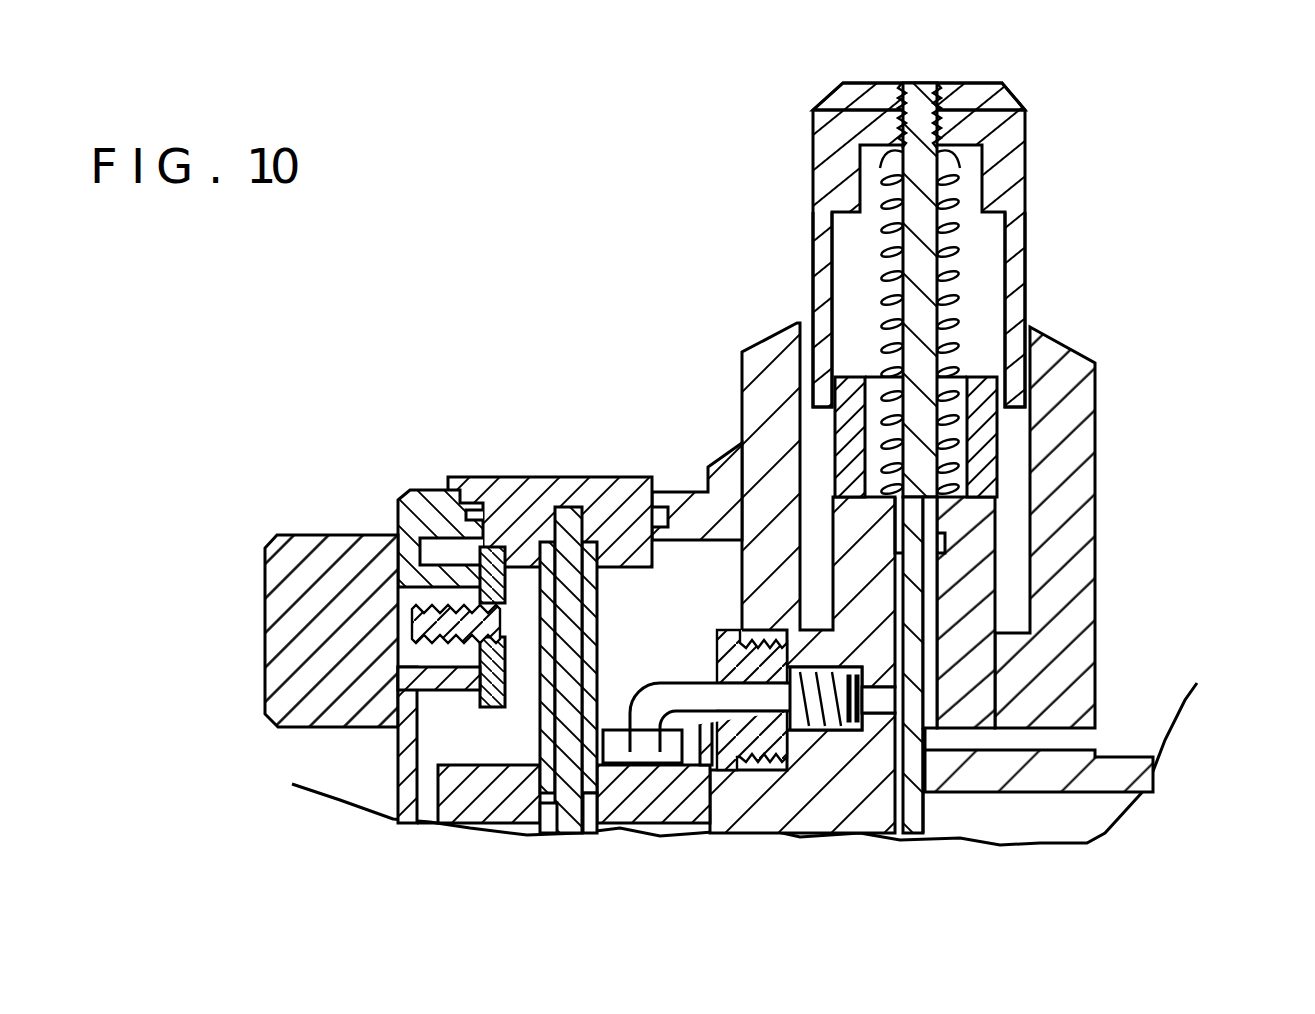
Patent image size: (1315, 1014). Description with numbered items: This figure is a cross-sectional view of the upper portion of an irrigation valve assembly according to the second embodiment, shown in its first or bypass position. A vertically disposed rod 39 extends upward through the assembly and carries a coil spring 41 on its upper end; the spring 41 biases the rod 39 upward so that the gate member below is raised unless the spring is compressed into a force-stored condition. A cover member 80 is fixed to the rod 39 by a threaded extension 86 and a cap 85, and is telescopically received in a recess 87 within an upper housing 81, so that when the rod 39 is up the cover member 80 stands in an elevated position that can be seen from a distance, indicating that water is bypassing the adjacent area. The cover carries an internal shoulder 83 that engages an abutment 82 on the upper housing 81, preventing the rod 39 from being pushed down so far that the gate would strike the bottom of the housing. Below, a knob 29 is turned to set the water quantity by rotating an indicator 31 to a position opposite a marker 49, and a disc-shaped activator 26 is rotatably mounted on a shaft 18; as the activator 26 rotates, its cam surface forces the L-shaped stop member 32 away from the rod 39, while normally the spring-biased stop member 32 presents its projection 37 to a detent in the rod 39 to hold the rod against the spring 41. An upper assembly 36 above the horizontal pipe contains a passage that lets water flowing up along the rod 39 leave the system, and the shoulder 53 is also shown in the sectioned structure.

The shaft 18 is at (552, 807).
The activator 26 is at (497, 793).
The knob 29 is at (303, 532).
The indicator 31 is at (523, 477).
The stop member 32 is at (767, 703).
The upper assembly 36 is at (1055, 738).
The projection 37 is at (882, 703).
The rod 39 is at (915, 308).
The coil spring 41 is at (962, 270).
The marker 49 is at (718, 482).
The shoulder 53 is at (940, 540).
The cover member 80 is at (1027, 170).
The upper housing 81 is at (725, 482).
The abutment 82 is at (797, 325).
The internal shoulder 83 is at (827, 247).
The cap 85 is at (985, 100).
The threaded extension 86 is at (918, 93).
The recess 87 is at (1010, 485).